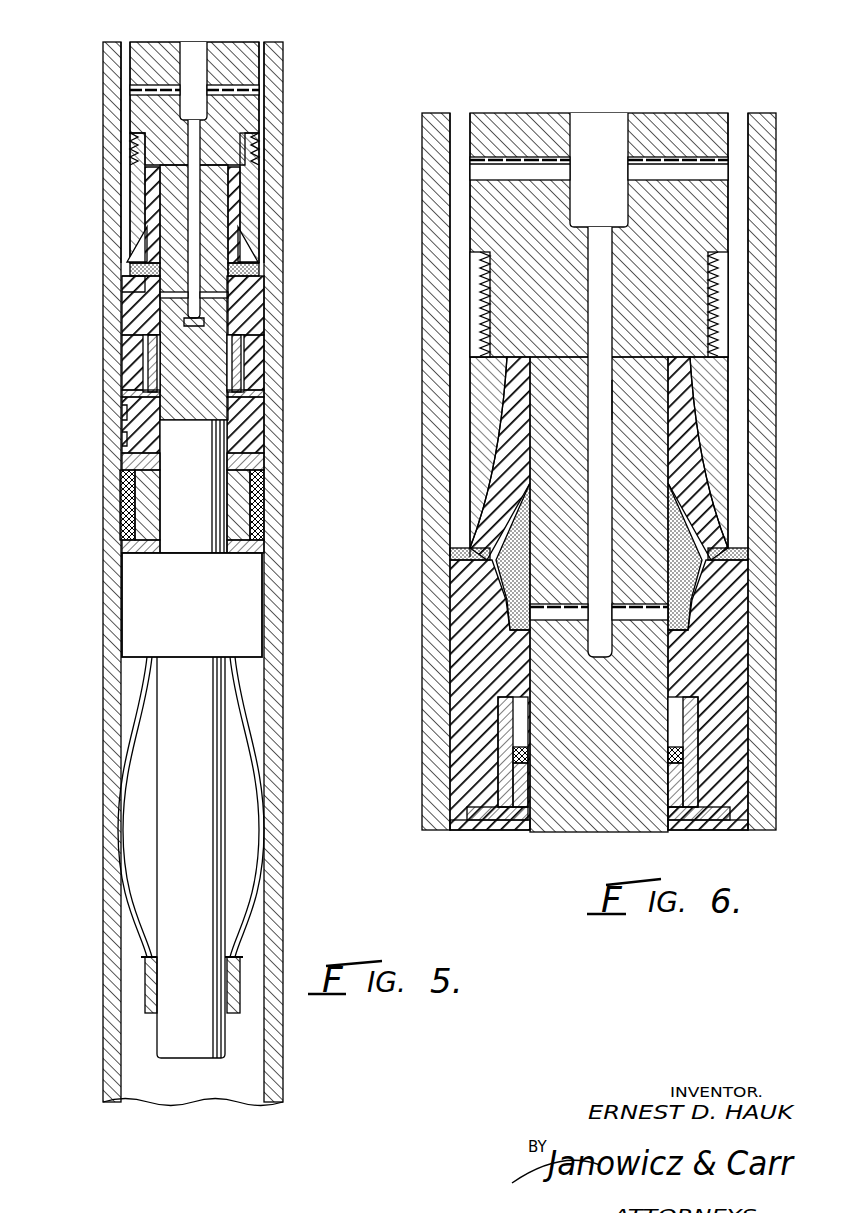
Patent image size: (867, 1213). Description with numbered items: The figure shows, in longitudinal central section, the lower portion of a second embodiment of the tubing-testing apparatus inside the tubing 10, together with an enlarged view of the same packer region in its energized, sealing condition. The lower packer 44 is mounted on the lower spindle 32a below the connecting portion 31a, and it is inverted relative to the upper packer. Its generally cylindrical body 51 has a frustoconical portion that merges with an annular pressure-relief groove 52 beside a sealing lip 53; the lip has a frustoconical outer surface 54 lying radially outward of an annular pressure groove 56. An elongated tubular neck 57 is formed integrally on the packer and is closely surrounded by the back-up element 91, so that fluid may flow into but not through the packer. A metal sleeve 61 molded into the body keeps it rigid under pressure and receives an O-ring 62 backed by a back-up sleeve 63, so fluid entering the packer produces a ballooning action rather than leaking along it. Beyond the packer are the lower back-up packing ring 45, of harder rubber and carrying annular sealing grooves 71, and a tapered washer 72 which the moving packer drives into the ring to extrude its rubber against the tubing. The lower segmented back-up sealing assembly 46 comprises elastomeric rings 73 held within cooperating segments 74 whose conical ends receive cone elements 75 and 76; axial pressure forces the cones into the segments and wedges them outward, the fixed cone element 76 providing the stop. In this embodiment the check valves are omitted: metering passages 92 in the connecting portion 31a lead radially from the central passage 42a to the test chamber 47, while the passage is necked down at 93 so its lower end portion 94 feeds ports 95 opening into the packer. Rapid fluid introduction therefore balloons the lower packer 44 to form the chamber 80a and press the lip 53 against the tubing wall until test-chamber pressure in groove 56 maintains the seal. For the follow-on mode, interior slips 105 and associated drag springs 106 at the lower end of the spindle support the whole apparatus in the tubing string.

In FIG. 5, the tubing 10 is at (283, 343).
In FIG. 6, the tubing 10 is at (766, 527).
In FIG. 5, the connecting portion 31a is at (243, 48).
In FIG. 6, the connecting portion 31a is at (527, 112).
In FIG. 5, the lower spindle 32a is at (201, 890).
In FIG. 6, the lower spindle 32a is at (592, 834).
In FIG. 5, the passage 42a is at (198, 44).
In FIG. 6, the passage 42a is at (604, 115).
In FIG. 5, the lower packer 44 is at (262, 320).
In FIG. 6, the lower packer 44 is at (448, 672).
In FIG. 5, the lower back-up packing ring 45 is at (250, 425).
In FIG. 6, the lower back-up packing ring 45 is at (468, 832).
In FIG. 5, the lower segmented back-up sealing assembly 46 is at (258, 492).
In FIG. 5, the test chamber 47 is at (265, 118).
In FIG. 6, the test chamber 47 is at (460, 116).
In FIG. 5, the packer body 51 is at (243, 372).
In FIG. 6, the packer body 51 is at (456, 755).
In FIG. 5, the annular pressure-relief groove 52 is at (256, 290).
In FIG. 6, the annular pressure-relief groove 52 is at (450, 615).
In FIG. 5, the sealing lip 53 is at (240, 265).
In FIG. 6, the sealing lip 53 is at (462, 560).
In FIG. 5, the frustoconical outer surface 54 is at (137, 283).
In FIG. 5, the annular pressure groove 56 is at (146, 268).
In FIG. 6, the annular pressure groove 56 is at (745, 556).
In FIG. 5, the tubular neck 57 is at (240, 184).
In FIG. 6, the tubular neck 57 is at (686, 458).
In FIG. 5, the metal sleeve 61 is at (146, 372).
In FIG. 6, the metal sleeve 61 is at (515, 712).
In FIG. 6, the O-ring 62 is at (530, 755).
In FIG. 6, the back-up sleeve 63 is at (530, 788).
In FIG. 5, the annular sealing grooves 71 is at (124, 440).
In FIG. 5, the tapered washer 72 is at (232, 395).
In FIG. 6, the tapered washer 72 is at (506, 833).
In FIG. 5, the elastomeric rings 73 is at (124, 512).
In FIG. 5, the cooperating segments 74 is at (161, 500).
In FIG. 5, the cone element 75 is at (245, 460).
In FIG. 5, the cone element 76 is at (248, 540).
In FIG. 6, the chamber 80a is at (528, 556).
In FIG. 5, the back-up element 91 is at (246, 204).
In FIG. 6, the back-up element 91 is at (718, 403).
In FIG. 5, the metering passages 92 is at (130, 90).
In FIG. 6, the metering passages 92 is at (475, 170).
In FIG. 5, the necked-down portion 93 is at (188, 124).
In FIG. 6, the necked-down portion 93 is at (616, 230).
In FIG. 5, the lower end portion 94 is at (184, 320).
In FIG. 6, the lower end portion 94 is at (613, 402).
In FIG. 5, the ports 95 is at (160, 295).
In FIG. 6, the ports 95 is at (555, 622).
In FIG. 5, the interior slips 105 is at (128, 640).
In FIG. 5, the drag springs 106 is at (258, 746).